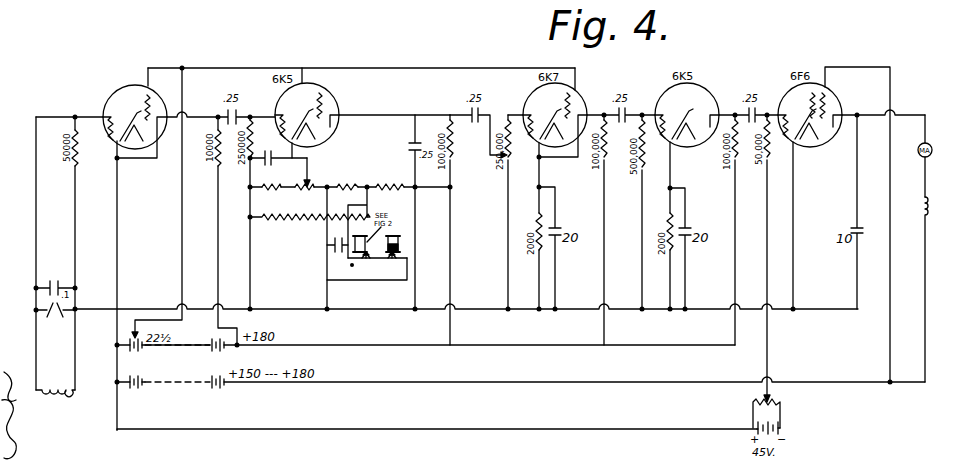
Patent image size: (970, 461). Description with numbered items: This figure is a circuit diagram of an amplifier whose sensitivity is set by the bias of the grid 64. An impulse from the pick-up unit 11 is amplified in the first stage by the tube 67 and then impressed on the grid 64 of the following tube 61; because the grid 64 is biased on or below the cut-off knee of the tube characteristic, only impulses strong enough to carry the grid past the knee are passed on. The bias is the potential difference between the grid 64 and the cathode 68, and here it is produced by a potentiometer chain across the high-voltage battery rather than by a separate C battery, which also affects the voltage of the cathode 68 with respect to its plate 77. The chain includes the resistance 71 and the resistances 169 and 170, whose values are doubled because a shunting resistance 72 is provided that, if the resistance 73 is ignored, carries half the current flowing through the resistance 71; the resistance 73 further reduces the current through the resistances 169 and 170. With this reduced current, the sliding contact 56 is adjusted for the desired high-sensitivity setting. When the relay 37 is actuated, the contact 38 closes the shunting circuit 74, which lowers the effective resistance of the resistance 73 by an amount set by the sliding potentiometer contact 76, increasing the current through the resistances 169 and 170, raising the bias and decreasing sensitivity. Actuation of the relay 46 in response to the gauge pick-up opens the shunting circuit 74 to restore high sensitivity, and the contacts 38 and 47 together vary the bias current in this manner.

The pickup coil 11 is at (55, 398).
The tube 67 is at (124, 90).
The second amplifier tube 6K5 61 is at (313, 93).
The grid 64 is at (284, 116).
The cathode 68 is at (298, 121).
The plate 77 is at (324, 115).
The sliding contact 56 is at (310, 158).
The resistance 169 is at (270, 186).
The resistance 170 is at (315, 186).
The sliding potentiometer contact 76 is at (342, 186).
The resistance 73 is at (354, 187).
The resistance 71 is at (393, 192).
The shunting resistance 72 is at (270, 218).
The relay 46 is at (350, 249).
The shunting circuit 74 is at (330, 282).
The contact 47 is at (363, 262).
The contact 38 is at (404, 262).
The relay 37 is at (400, 239).